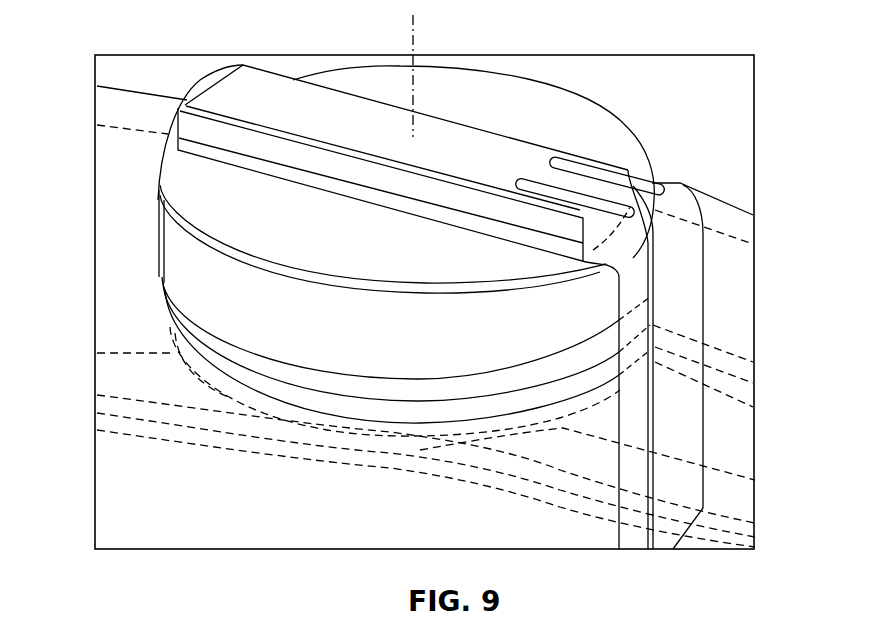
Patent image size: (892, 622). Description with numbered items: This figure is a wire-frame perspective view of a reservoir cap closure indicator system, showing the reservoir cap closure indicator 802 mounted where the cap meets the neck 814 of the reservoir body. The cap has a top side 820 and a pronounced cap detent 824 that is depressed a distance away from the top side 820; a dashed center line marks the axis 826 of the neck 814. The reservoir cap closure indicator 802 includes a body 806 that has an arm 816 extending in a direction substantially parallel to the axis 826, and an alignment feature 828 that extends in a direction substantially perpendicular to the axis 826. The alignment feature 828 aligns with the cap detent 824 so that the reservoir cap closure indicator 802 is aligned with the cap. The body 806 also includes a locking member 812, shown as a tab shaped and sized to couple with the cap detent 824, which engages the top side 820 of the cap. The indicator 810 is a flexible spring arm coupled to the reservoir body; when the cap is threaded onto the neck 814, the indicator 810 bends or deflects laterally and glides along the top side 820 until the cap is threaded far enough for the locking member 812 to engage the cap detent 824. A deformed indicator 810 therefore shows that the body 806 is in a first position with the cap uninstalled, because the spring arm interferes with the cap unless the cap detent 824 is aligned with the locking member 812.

The reservoir cap closure indicator 802 is at (667, 331).
The body 806 is at (687, 297).
The indicator 810 is at (676, 241).
The locking member 812 is at (567, 283).
The neck 814 is at (187, 340).
The arm 816 is at (677, 374).
The top side 820 is at (370, 102).
The cap detent 824 is at (600, 226).
The axis 826 is at (413, 38).
The alignment feature 828 is at (633, 173).